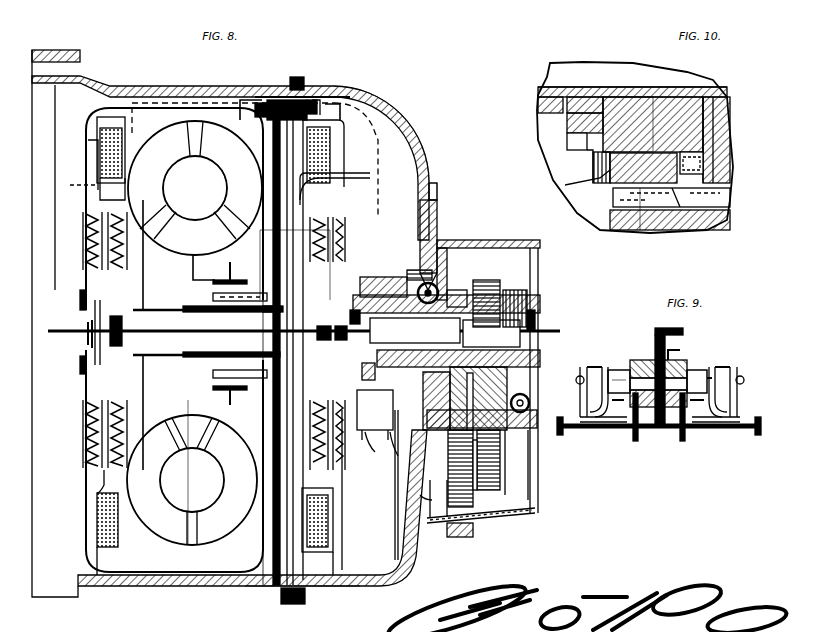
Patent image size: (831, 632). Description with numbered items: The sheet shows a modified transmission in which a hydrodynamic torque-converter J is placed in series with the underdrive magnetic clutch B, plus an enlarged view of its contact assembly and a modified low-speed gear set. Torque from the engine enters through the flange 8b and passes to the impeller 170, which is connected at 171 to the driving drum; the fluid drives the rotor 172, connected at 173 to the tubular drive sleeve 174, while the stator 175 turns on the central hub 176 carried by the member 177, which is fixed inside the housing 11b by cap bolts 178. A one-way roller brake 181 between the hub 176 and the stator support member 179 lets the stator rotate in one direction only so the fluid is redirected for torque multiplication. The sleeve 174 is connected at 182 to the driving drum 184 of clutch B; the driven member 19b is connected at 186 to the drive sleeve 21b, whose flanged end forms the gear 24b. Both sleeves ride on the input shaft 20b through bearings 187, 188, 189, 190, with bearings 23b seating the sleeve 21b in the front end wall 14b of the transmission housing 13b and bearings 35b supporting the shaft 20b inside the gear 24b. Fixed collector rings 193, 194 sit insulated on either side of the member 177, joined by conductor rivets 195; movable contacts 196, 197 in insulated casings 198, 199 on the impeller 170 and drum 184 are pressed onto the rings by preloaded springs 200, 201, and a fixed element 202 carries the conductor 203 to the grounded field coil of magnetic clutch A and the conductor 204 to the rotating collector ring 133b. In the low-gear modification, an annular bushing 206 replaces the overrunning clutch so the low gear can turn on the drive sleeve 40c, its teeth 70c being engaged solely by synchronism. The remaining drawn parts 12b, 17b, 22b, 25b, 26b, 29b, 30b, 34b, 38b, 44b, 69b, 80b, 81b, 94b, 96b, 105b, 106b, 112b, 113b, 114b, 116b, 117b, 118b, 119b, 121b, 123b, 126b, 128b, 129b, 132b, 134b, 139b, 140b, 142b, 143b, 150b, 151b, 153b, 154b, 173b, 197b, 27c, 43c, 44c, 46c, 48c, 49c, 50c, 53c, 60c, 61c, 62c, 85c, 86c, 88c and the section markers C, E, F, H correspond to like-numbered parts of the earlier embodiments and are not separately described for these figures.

In FIG. 8, the flange 8b is at (63, 330).
In FIG. 8, the housing 11b is at (424, 148).
In FIG. 8, the bearing 12b is at (394, 279).
In FIG. 8, the transmission housing 13b is at (495, 244).
In FIG. 8, the front end wall 14b is at (440, 200).
In FIG. 8, the cover 17b is at (535, 513).
In FIG. 8, the driven member 19b is at (82, 200).
In FIG. 8, the input shaft 20b is at (160, 333).
In FIG. 8, the drive sleeve 21b is at (347, 320).
In FIG. 8, the sleeve 22b is at (426, 339).
In FIG. 8, the bearings 23b is at (438, 250).
In FIG. 8, the gear 24b is at (447, 265).
In FIG. 8, the bracket 25b is at (475, 530).
In FIG. 8, the gear 26b is at (498, 490).
In FIG. 8, the gear shaft 29b is at (505, 480).
In FIG. 8, the plate 30b is at (443, 517).
In FIG. 8, the bearing 34b is at (540, 330).
In FIG. 8, the bearings 35b is at (457, 290).
In FIG. 8, the gear 38b is at (487, 280).
In FIG. 8, the sleeve 44b is at (491, 333).
In FIG. 8, the end plate 69b is at (532, 246).
In FIG. 8, the pin 80b is at (538, 372).
In FIG. 9, the pin 80b is at (560, 380).
In FIG. 8, the spring 81b is at (540, 285).
In FIG. 8, the pin 94b is at (535, 437).
In FIG. 8, the bolt 96b is at (518, 394).
In FIG. 8, the rotor 105b is at (120, 215).
In FIG. 8, the clutch plate 106b is at (338, 215).
In FIG. 8, the coil 112b is at (122, 135).
In FIG. 8, the core 113b is at (125, 155).
In FIG. 8, the plate 114b is at (100, 575).
In FIG. 8, the clutch plate 116b is at (110, 400).
In FIG. 8, the coil 117b is at (97, 515).
In FIG. 8, the plate 118b is at (88, 152).
In FIG. 8, the cover 119b is at (372, 100).
In FIG. 8, the clutch plate 121b is at (95, 437).
In FIG. 8, the plate 123b is at (345, 470).
In FIG. 8, the disc 126b is at (92, 358).
In FIG. 8, the hub 128b is at (446, 319).
In FIG. 8, the disc 129b is at (95, 345).
In FIG. 8, the spring 132b is at (362, 375).
In FIG. 8, the rotating collector ring 133b is at (418, 288).
In FIG. 8, the retainer 134b is at (400, 270).
In FIG. 8, the solenoid 139b is at (447, 398).
In FIG. 8, the lead 140b is at (432, 500).
In FIG. 8, the lead 142b is at (393, 436).
In FIG. 8, the spring 143b is at (375, 452).
In FIG. 8, the spring 150b is at (395, 457).
In FIG. 8, the core 151b is at (365, 490).
In FIG. 8, the plate 153b is at (372, 180).
In FIG. 8, the plate 154b is at (70, 186).
In FIG. 8, the impeller 170 is at (215, 165).
In FIG. 9, the impeller 170 is at (565, 430).
In FIG. 8, the connection 171 is at (205, 120).
In FIG. 8, the rotor 172 is at (165, 188).
In FIG. 8, the connection 173 is at (143, 273).
In FIG. 8, the wall 173b is at (97, 472).
In FIG. 8, the tubular drive sleeve 174 is at (165, 309).
In FIG. 8, the stator 175 is at (200, 250).
In FIG. 8, the central hub 176 is at (255, 293).
In FIG. 8, the member 177 is at (270, 395).
In FIG. 9, the member 177 is at (684, 331).
In FIG. 8, the cap bolts 178 is at (292, 604).
In FIG. 8, the stator support member 179 is at (270, 312).
In FIG. 8, the one-way roller brake 181 is at (225, 312).
In FIG. 8, the connection 182 is at (262, 353).
In FIG. 8, the driving drum 184 is at (330, 108).
In FIG. 9, the driving drum 184 is at (762, 428).
In FIG. 8, the connection 186 is at (330, 300).
In FIG. 8, the bearing 187 is at (140, 330).
In FIG. 8, the bearing 188 is at (150, 356).
In FIG. 8, the bearing 189 is at (316, 338).
In FIG. 8, the bearing 190 is at (349, 338).
In FIG. 8, the fixed collector ring 193 is at (238, 142).
In FIG. 9, the fixed collector ring 193 is at (638, 441).
In FIG. 8, the fixed collector ring 194 is at (273, 172).
In FIG. 9, the fixed collector ring 194 is at (685, 441).
In FIG. 8, the conductor rivets 195 is at (297, 77).
In FIG. 9, the conductor rivets 195 is at (672, 362).
In FIG. 8, the movable contact 196 is at (283, 98).
In FIG. 9, the movable contact 196 is at (620, 370).
In FIG. 8, the movable contact 197 is at (306, 92).
In FIG. 9, the movable contact 197 is at (708, 372).
In FIG. 8, the bracket 197b is at (125, 180).
In FIG. 9, the insulated casing 198 is at (650, 410).
In FIG. 9, the insulated casing 199 is at (700, 425).
In FIG. 8, the preloaded spring 200 is at (270, 100).
In FIG. 9, the preloaded spring 200 is at (618, 425).
In FIG. 8, the preloaded spring 201 is at (313, 100).
In FIG. 9, the preloaded spring 201 is at (708, 376).
In FIG. 8, the fixed element 202 is at (260, 100).
In FIG. 9, the fixed element 202 is at (590, 367).
In FIG. 8, the conductor 203 is at (132, 103).
In FIG. 9, the conductor 203 is at (578, 367).
In FIG. 8, the conductor 204 is at (398, 108).
In FIG. 9, the conductor 204 is at (742, 378).
In FIG. 10, the annular bushing 206 is at (575, 185).
In FIG. 10, the base 27c is at (675, 222).
In FIG. 10, the drive sleeve 40c is at (580, 70).
In FIG. 10, the flange 43c is at (548, 100).
In FIG. 10, the housing 44c is at (580, 63).
In FIG. 10, the wall 46c is at (715, 90).
In FIG. 10, the block 48c is at (650, 97).
In FIG. 10, the block 49c is at (618, 100).
In FIG. 10, the block 50c is at (612, 183).
In FIG. 10, the plate 53c is at (730, 212).
In FIG. 10, the pin 60c is at (700, 160).
In FIG. 10, the block 61c is at (585, 97).
In FIG. 10, the recess 62c is at (567, 140).
In FIG. 10, the teeth 70c is at (580, 150).
In FIG. 10, the wall 85c is at (728, 112).
In FIG. 10, the wall 86c is at (718, 118).
In FIG. 10, the plate 88c is at (730, 196).
In FIG. 8, the magnetic clutch A is at (80, 143).
In FIG. 8, the underdrive magnetic clutch B is at (352, 151).
In FIG. 8, the section C is at (527, 284).
In FIG. 8, the section E is at (551, 303).
In FIG. 8, the section F is at (523, 460).
In FIG. 8, the section H is at (418, 330).
In FIG. 8, the hydrodynamic torque-converter J is at (222, 562).